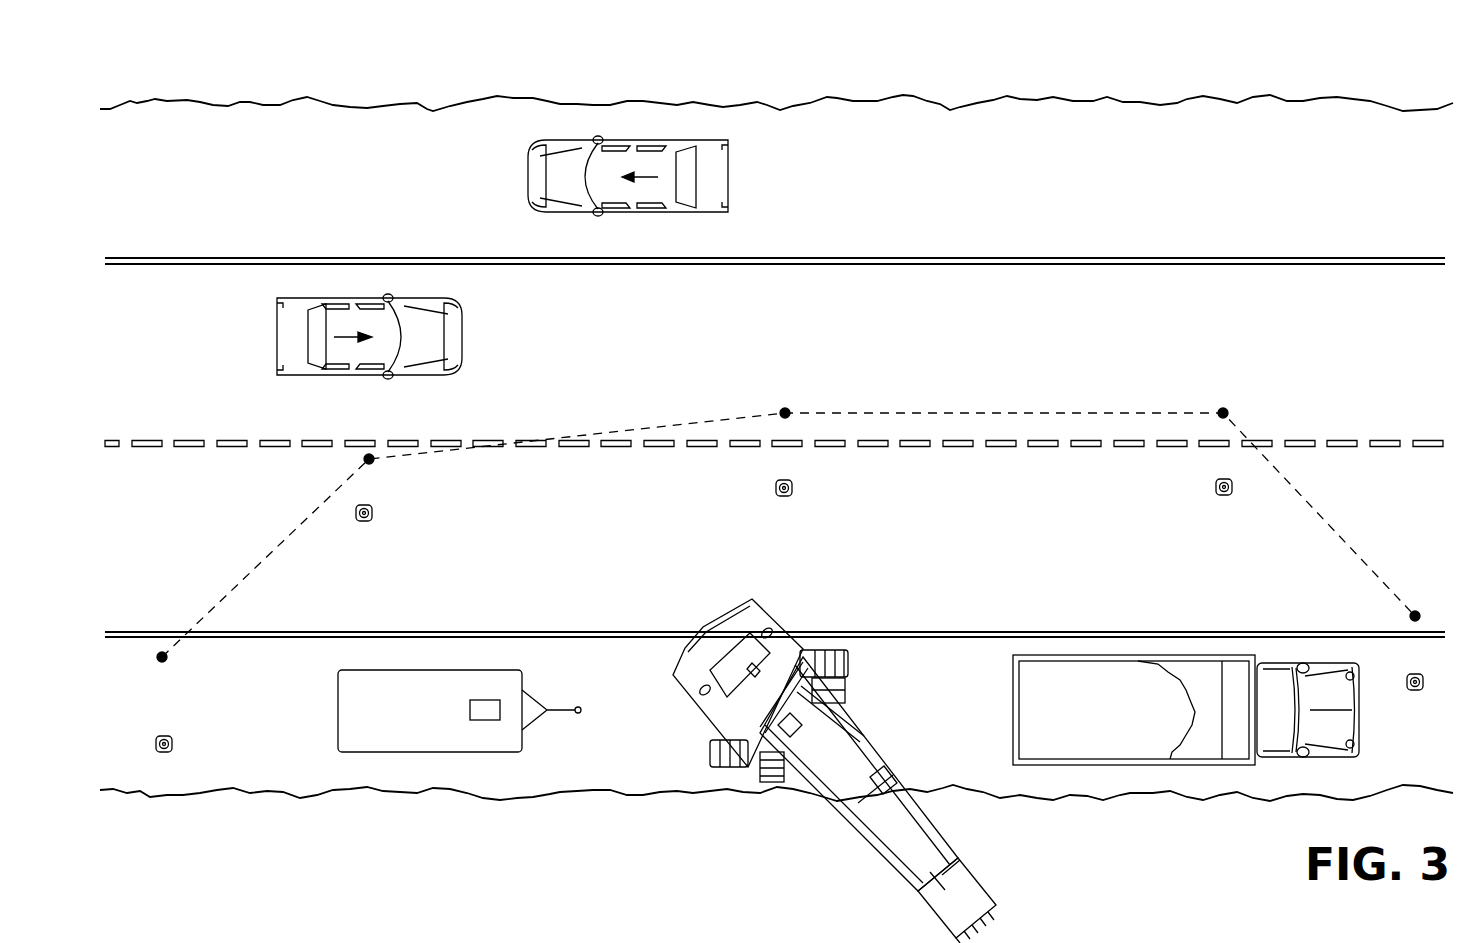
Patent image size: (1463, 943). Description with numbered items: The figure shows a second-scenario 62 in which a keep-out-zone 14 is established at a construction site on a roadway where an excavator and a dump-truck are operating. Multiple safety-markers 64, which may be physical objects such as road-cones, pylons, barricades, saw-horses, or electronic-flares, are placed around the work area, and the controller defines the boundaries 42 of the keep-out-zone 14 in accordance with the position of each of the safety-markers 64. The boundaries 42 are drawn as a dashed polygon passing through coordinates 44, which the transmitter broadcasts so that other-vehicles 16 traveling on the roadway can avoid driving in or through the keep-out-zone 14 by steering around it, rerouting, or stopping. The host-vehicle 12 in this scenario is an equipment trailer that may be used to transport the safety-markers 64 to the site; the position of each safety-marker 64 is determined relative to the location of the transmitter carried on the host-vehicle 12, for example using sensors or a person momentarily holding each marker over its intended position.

The host-vehicle 12 is at (367, 737).
The keep-out-zone 14 is at (315, 600).
The other-vehicles 16 is at (357, 297).
The boundaries 42 is at (280, 543).
The coordinates 44 is at (367, 457).
The second-scenario 62 is at (1302, 83).
The safety-markers 64 is at (357, 509).